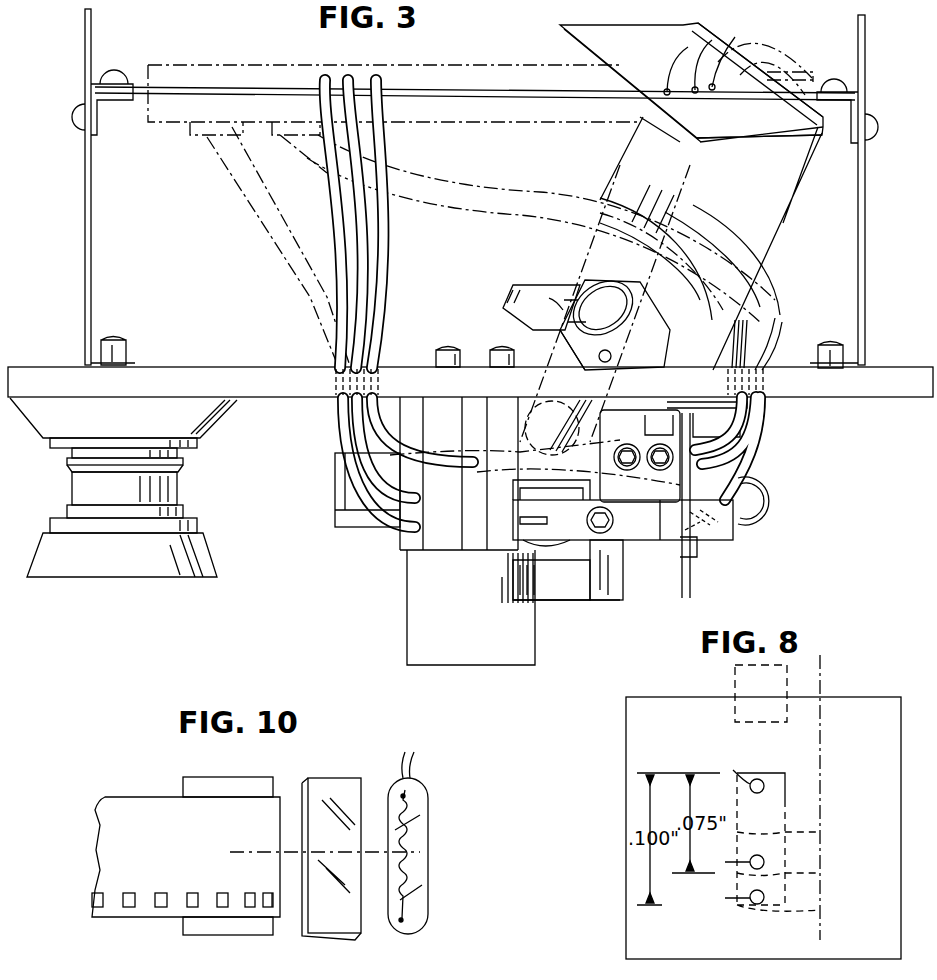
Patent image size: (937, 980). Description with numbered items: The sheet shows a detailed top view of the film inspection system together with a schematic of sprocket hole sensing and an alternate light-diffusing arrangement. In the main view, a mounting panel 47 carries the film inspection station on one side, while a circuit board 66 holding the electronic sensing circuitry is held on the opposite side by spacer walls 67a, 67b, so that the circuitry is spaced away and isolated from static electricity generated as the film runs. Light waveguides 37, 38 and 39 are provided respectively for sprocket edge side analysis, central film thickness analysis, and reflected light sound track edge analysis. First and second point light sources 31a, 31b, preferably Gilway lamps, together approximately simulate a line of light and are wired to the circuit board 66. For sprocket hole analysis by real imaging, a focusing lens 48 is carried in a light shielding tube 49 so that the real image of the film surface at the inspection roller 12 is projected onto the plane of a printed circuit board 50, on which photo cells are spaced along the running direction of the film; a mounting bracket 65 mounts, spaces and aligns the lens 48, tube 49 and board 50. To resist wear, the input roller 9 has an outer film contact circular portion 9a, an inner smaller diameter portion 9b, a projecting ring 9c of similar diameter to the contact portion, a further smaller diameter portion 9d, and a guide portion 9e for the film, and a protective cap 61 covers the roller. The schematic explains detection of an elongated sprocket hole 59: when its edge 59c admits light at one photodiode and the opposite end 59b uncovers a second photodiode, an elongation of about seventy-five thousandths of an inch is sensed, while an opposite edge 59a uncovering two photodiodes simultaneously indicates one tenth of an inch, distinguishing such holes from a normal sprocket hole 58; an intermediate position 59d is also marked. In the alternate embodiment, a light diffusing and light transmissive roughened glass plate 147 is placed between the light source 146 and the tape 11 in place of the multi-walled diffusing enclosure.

In FIG. 3, the input roller 9 is at (137, 469).
In FIG. 3, the outer film contact circular portion 9a is at (180, 520).
In FIG. 3, the inner smaller diameter portion 9b is at (180, 490).
In FIG. 3, the projecting ring 9c is at (70, 464).
In FIG. 3, the smaller diameter portion 9d is at (72, 454).
In FIG. 3, the guide portion 9e is at (197, 446).
In FIG. 10, the tape 11 is at (132, 795).
In FIG. 10, the inspection roller 12 is at (185, 788).
In FIG. 3, the first point light source 31a is at (690, 544).
In FIG. 3, the second point light source 31b is at (700, 472).
In FIG. 3, the light waveguide 37 is at (388, 530).
In FIG. 3, the light waveguide 38 is at (416, 495).
In FIG. 3, the light waveguide 39 is at (428, 455).
In FIG. 3, the mounting panel 47 is at (873, 399).
In FIG. 3, the focusing lens 48 is at (605, 310).
In FIG. 3, the light shielding tube 49 is at (582, 296).
In FIG. 3, the printed circuit board 50 is at (660, 70).
In FIG. 8, the normal sprocket hole 58 is at (735, 705).
In FIG. 8, the elongated sprocket hole 59 is at (789, 821).
In FIG. 8, the opposite edge 59a is at (820, 912).
In FIG. 8, the opposite end 59b is at (820, 873).
In FIG. 8, the edge 59c is at (778, 773).
In FIG. 8, the intermediate position 59d is at (820, 833).
In FIG. 3, the protective cap 61 is at (200, 565).
In FIG. 3, the mounting bracket 65 is at (772, 257).
In FIG. 3, the circuit board 66 is at (174, 100).
In FIG. 3, the spacer wall 67a is at (866, 250).
In FIG. 3, the spacer wall 67b is at (84, 222).
In FIG. 10, the light source 146 is at (428, 863).
In FIG. 10, the filter 147 is at (346, 782).